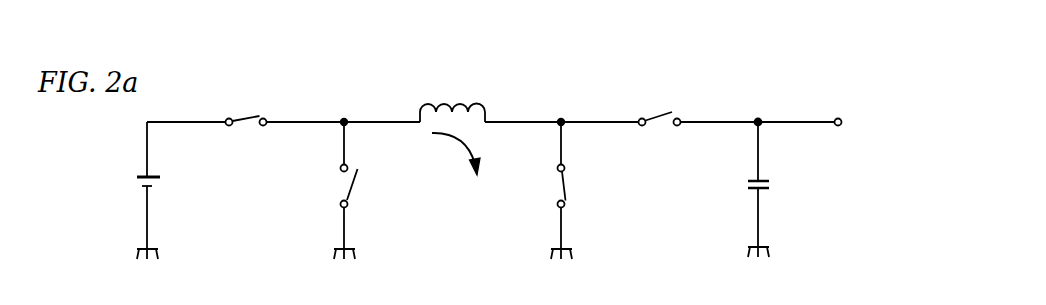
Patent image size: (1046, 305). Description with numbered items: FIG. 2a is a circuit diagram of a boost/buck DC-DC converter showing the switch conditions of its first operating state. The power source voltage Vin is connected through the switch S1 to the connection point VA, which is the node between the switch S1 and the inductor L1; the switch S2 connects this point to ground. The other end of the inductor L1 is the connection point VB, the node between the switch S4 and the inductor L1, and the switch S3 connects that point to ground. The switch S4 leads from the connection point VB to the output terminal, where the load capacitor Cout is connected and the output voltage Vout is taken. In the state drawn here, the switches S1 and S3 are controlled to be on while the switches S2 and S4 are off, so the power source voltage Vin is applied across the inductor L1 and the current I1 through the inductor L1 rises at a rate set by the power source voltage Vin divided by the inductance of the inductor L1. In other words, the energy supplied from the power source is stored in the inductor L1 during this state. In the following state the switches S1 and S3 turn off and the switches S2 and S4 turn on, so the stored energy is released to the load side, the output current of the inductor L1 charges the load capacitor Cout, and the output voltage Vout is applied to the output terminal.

The power source voltage Vin is at (130, 211).
The switch S1 is at (246, 103).
The switch S2 is at (332, 190).
The switch S3 is at (547, 190).
The switch S4 is at (660, 100).
The voltage at the connection point between switch S1 and inductor L1 VA is at (343, 104).
The voltage at the connection point between switch S4 and inductor L1 VB is at (562, 104).
The inductor L1 is at (452, 100).
The current through inductor I1 is at (456, 154).
The load capacitor Cout is at (781, 188).
The output voltage Vout is at (862, 124).